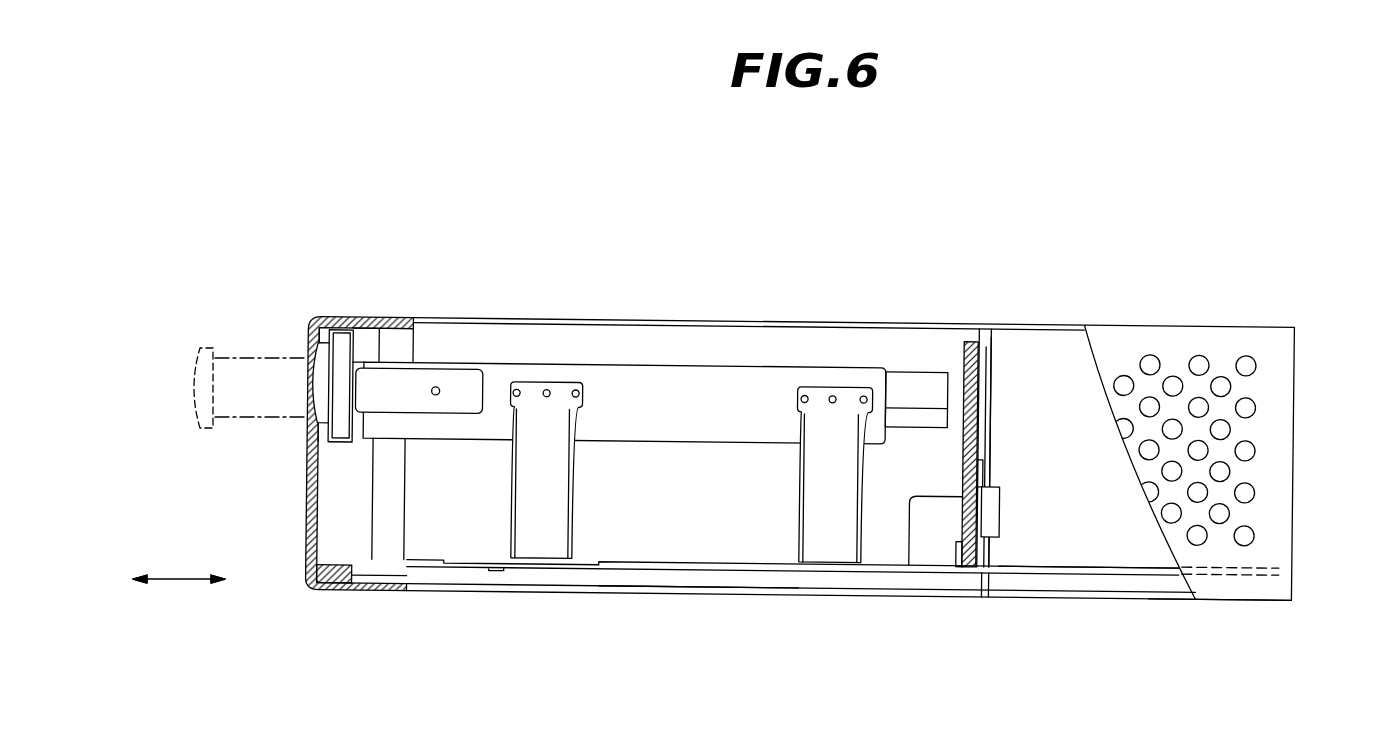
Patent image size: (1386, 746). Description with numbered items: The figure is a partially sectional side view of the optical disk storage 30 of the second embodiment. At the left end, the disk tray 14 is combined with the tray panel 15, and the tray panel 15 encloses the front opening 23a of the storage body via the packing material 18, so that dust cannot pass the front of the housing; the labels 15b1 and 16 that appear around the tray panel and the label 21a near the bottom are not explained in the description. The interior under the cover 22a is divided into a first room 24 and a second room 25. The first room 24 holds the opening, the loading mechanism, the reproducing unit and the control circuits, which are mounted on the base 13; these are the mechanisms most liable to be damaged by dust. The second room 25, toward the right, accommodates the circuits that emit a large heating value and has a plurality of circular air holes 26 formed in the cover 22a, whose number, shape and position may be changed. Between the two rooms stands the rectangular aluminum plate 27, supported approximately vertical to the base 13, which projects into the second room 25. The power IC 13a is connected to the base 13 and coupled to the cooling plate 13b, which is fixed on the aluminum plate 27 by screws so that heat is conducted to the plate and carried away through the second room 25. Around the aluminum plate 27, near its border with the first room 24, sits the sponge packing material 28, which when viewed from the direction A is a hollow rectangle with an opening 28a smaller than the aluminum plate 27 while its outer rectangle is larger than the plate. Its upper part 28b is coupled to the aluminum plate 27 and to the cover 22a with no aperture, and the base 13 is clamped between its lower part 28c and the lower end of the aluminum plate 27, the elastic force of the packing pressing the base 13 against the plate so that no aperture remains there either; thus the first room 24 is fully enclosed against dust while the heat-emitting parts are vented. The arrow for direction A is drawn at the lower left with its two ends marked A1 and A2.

The optical disk storage 30 is at (642, 158).
The base 13 is at (1085, 577).
The power IC 13a is at (1000, 494).
The cooling plate 13b is at (985, 463).
The disk tray 14 is at (903, 372).
The tray panel 15 is at (195, 352).
The lens surface 15b1 is at (212, 462).
The lens aperture 16 is at (313, 352).
The packing material 18 is at (340, 358).
The base plate 21a is at (612, 566).
The cover 22a is at (690, 318).
The opening 23a is at (305, 548).
The first room 24 is at (697, 600).
The second room 25 is at (1178, 608).
The air holes 26 is at (1216, 342).
The aluminum plate 27 is at (963, 345).
The packing material 28 is at (1003, 393).
The opening 28a is at (992, 372).
The upper part 28b is at (987, 340).
The lower part 28c is at (990, 598).
The direction A is at (179, 560).
The first direction A1 is at (127, 601).
The second direction A2 is at (233, 603).